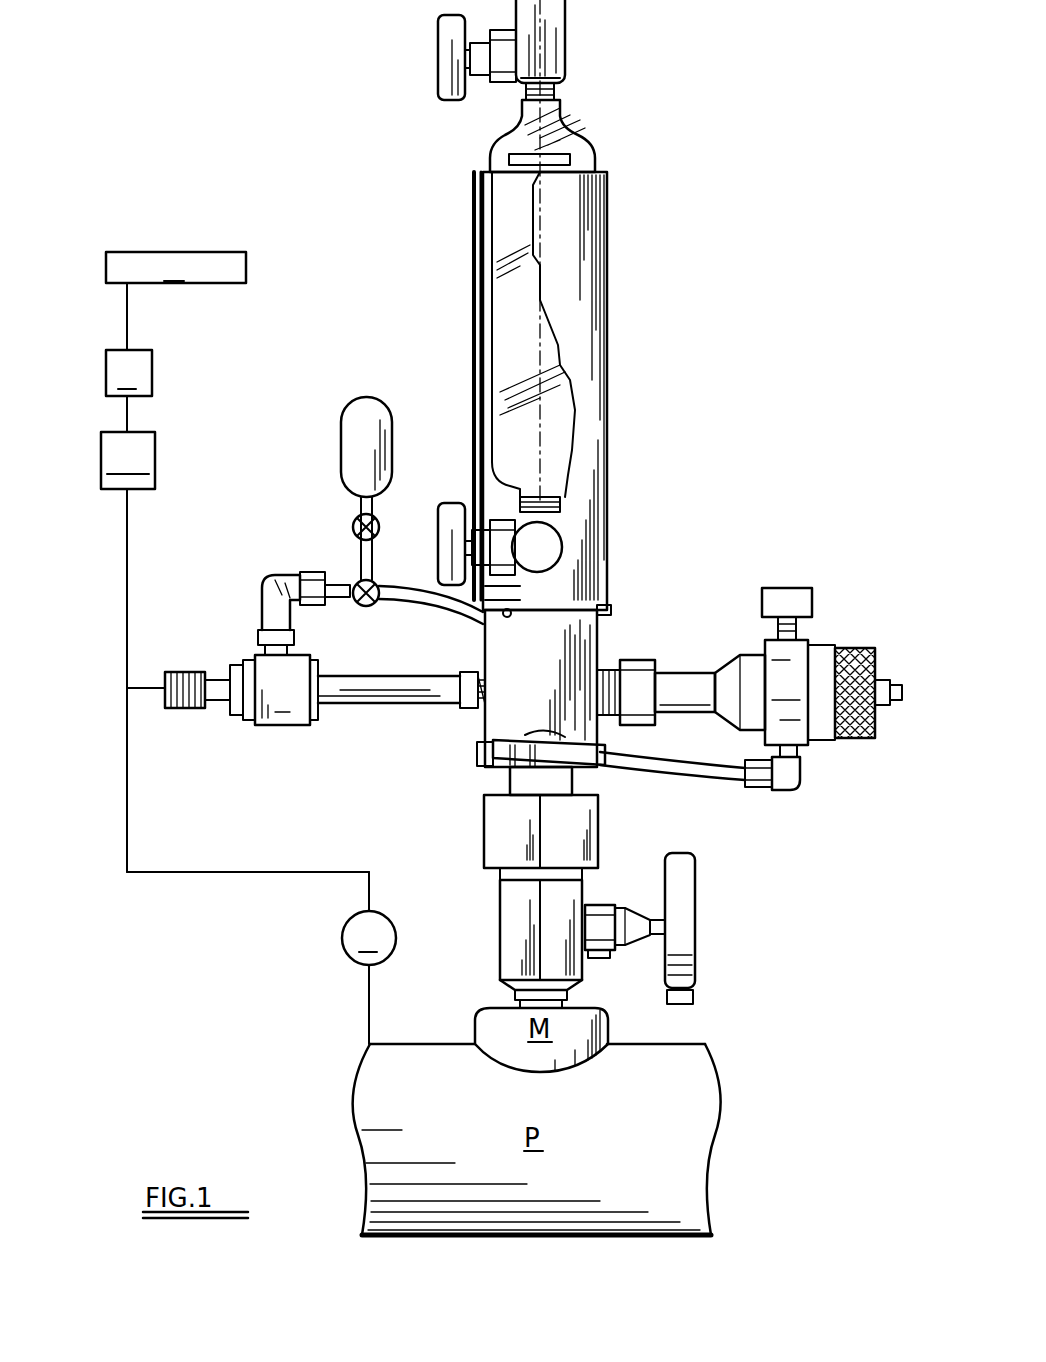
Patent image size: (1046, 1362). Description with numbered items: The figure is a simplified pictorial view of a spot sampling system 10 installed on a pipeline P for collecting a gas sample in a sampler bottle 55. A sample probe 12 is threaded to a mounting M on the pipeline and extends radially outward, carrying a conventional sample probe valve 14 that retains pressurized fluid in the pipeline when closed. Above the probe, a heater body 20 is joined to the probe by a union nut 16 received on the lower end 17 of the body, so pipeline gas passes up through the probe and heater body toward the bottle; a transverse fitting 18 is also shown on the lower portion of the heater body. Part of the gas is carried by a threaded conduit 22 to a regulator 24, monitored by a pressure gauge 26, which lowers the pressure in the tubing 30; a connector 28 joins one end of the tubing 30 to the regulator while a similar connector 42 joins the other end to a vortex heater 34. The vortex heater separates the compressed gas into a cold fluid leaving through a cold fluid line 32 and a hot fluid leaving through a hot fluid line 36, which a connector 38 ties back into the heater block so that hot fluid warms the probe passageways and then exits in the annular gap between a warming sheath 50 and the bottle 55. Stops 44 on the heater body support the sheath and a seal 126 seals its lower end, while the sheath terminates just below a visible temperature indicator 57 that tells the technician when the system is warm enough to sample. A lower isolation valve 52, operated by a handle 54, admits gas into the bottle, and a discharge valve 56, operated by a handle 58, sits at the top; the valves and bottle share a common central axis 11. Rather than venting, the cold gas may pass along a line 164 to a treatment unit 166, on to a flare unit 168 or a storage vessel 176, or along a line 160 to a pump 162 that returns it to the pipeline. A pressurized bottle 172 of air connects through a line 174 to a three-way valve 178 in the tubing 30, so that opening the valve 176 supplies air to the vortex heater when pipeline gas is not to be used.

The spot sampling system 10 is at (628, 483).
The central axis 11 is at (545, 342).
The sample probe 12 is at (510, 925).
The sample probe valve 14 is at (625, 948).
The union nut 16 is at (495, 820).
The lower end of heater body 17 is at (510, 782).
The clamp bolt 18 is at (505, 747).
The heater body 20 is at (590, 628).
The threaded conduit 22 is at (680, 680).
The regulator 24 is at (822, 740).
The pressure gauge 26 is at (812, 600).
The connector 28 is at (792, 790).
The tubing 30 is at (412, 600).
The cold fluid line 32 is at (215, 672).
The vortex heater 34 is at (278, 728).
The hot fluid line 36 is at (410, 700).
The connector 38 is at (490, 680).
The connector 42 is at (268, 595).
The stops 44 is at (625, 612).
The warming sheath 50 is at (585, 253).
The lower isolation valve 52 is at (548, 540).
The handle 54 is at (440, 548).
The sampler bottle 55 is at (512, 358).
The discharge valve 56 is at (548, 40).
The temperature indicator 57 is at (510, 156).
The handle 58 is at (440, 50).
The seal 126 is at (510, 616).
The line 160 is at (127, 832).
The pump 162 is at (342, 938).
The line 164 is at (128, 560).
The treatment unit 166 is at (155, 458).
The flare unit 168 is at (152, 366).
The pressurized bottle 172 is at (350, 440).
The line 174 is at (365, 555).
The storage vessel 176 is at (355, 520).
The three-way valve 178 is at (372, 607).